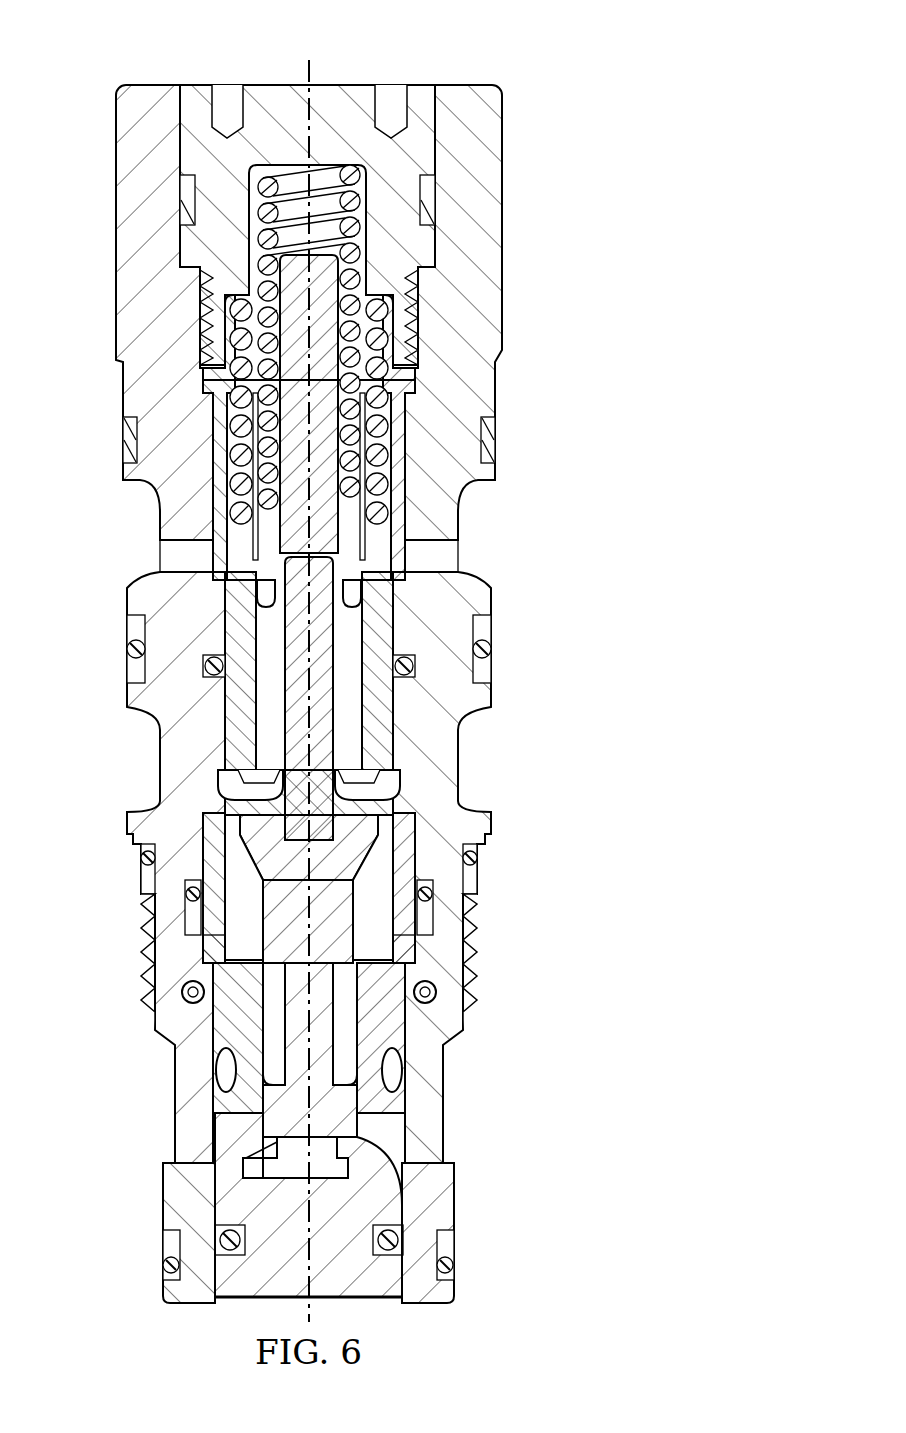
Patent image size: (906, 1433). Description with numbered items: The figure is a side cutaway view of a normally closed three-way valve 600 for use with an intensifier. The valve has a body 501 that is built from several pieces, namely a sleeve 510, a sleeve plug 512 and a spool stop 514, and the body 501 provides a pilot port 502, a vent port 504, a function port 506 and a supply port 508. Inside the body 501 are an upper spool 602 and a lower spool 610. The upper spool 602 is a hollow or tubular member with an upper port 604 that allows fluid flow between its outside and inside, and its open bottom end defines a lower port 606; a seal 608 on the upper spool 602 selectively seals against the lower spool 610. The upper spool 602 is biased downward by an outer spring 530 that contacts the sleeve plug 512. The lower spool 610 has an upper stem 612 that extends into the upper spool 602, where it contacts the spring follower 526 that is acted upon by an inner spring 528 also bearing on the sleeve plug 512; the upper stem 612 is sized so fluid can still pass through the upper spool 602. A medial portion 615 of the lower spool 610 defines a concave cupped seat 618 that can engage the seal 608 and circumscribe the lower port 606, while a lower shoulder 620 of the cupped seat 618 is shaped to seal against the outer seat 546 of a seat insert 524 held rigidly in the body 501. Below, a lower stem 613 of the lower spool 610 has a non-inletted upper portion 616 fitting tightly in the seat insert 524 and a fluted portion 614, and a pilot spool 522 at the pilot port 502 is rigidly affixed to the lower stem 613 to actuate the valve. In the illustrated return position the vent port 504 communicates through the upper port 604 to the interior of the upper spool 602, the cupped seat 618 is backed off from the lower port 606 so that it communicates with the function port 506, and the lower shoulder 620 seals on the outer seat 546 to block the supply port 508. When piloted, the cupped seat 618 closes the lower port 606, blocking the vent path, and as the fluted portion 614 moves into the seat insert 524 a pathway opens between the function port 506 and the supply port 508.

The normally closed three-way valve 600 is at (502, 56).
The body 501 is at (506, 190).
The sleeve 510 is at (125, 200).
The sleeve plug 512 is at (358, 90).
The inner spring 528 is at (367, 237).
The outer spring 530 is at (393, 325).
The spring follower 526 is at (267, 532).
The vent port 504 is at (450, 552).
The upper port 604 is at (222, 588).
The upper stem 612 is at (290, 627).
The lower port 606 is at (355, 640).
The upper spool 602 is at (402, 688).
The seal 608 is at (240, 772).
The function port 506 is at (393, 752).
The cupped seat 618 is at (250, 800).
The medial portion 615 is at (255, 835).
The lower spool 610 is at (420, 804).
The lower shoulder 620 is at (393, 880).
The outer seat 546 is at (380, 884).
The seat insert 524 is at (217, 942).
The non-inletted upper portion 616 is at (420, 906).
The fluted portion 614 is at (367, 1008).
The supply port 508 is at (407, 1068).
The lower stem 613 is at (277, 1127).
The spool stop 514 is at (172, 1188).
The pilot spool 522 is at (228, 1303).
The pilot port 502 is at (393, 1303).